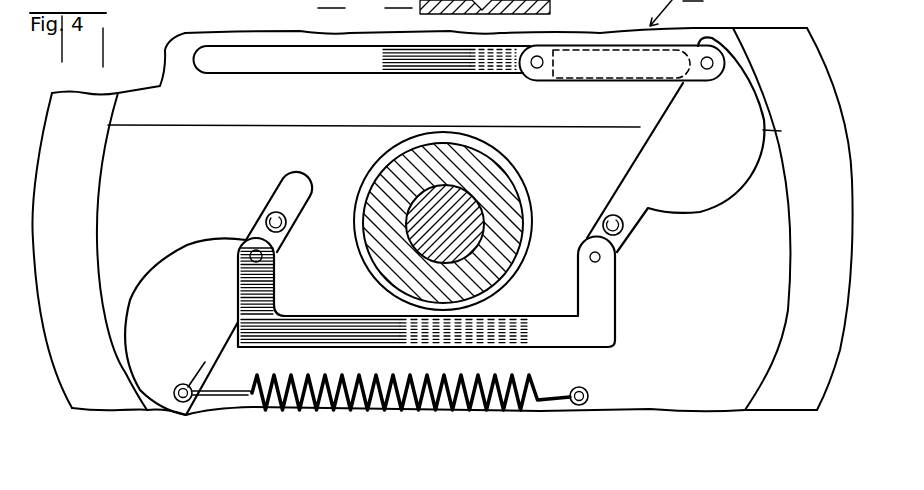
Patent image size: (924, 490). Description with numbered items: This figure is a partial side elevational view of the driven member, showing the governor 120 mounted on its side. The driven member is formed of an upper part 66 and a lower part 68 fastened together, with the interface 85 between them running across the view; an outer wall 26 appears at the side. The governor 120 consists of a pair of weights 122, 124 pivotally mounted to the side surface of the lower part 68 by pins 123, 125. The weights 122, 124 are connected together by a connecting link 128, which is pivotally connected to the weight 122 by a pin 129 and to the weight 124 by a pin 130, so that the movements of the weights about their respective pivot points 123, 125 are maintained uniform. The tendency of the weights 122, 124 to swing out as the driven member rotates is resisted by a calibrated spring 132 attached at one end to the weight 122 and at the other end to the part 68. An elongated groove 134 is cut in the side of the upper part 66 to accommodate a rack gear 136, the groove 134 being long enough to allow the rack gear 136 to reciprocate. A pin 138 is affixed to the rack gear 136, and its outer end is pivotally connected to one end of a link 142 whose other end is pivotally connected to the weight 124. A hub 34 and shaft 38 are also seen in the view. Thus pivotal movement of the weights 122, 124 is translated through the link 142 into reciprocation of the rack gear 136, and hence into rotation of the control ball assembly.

The side wall 26 is at (66, 107).
The upper part 66 is at (163, 97).
The lower part 68 is at (120, 198).
The interface 85 is at (230, 127).
The elongated groove 134 is at (277, 71).
The rack gear 136 is at (441, 61).
The pin 138 is at (530, 78).
The link 142 is at (680, 72).
The hub 34 is at (500, 182).
The shaft 38 is at (443, 209).
The weight 122 is at (152, 283).
The pin 123 is at (263, 218).
The pin 129 is at (249, 257).
The connecting link 128 is at (367, 327).
The pin 130 is at (592, 259).
The pin 125 is at (605, 223).
The weight 124 is at (737, 157).
The governor 120 is at (663, 273).
The calibrated spring 132 is at (500, 375).